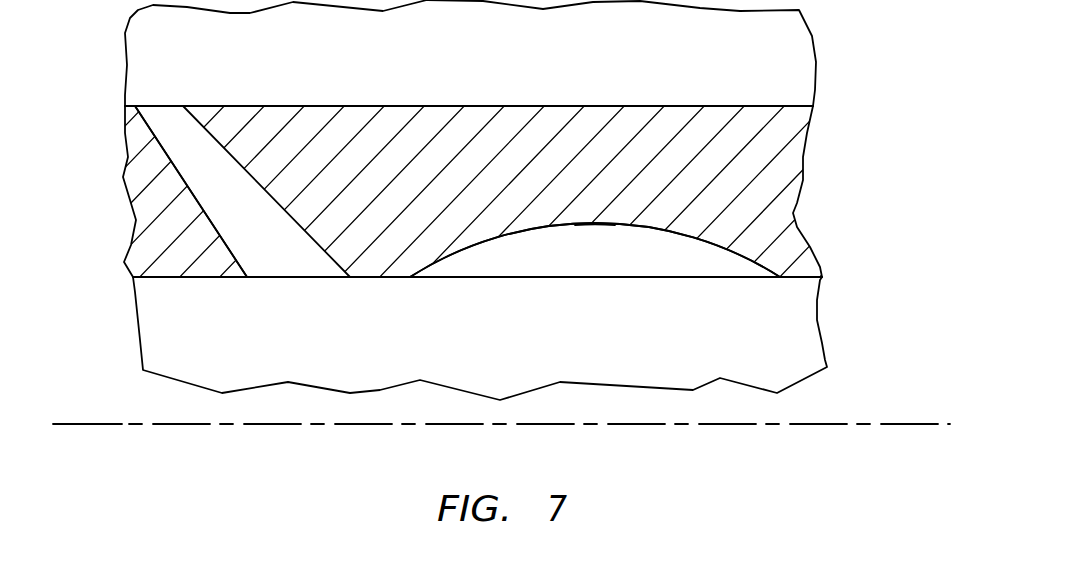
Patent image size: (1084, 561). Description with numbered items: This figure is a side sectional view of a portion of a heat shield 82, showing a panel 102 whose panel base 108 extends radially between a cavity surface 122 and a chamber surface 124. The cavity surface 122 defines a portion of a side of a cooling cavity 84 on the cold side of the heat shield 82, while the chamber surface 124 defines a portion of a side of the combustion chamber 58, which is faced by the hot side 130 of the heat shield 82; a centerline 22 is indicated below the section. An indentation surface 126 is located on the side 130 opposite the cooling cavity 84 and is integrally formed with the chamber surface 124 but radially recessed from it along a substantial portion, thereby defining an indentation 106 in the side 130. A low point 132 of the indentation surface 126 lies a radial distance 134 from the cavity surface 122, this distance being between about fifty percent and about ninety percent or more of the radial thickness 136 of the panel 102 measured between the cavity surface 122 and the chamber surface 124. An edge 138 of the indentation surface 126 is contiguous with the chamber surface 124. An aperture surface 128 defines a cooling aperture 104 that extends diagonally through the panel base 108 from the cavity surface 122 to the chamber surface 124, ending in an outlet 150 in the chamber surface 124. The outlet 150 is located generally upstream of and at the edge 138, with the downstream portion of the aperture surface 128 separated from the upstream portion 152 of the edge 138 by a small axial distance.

The centerline axis 22 is at (808, 425).
The combustion chamber 58 is at (518, 381).
The heat shield 82 is at (822, 127).
The cooling cavity 84 is at (425, 65).
The panel 102 is at (495, 191).
The cooling aperture 104 is at (268, 255).
The indentation 106 is at (610, 260).
The panel base 108 is at (789, 207).
The cavity surface 122 is at (778, 106).
The chamber surface 124 is at (797, 278).
The indentation surface 126 is at (454, 253).
The aperture surface 128 is at (230, 247).
The side 130 is at (155, 285).
The low point 132 is at (597, 226).
The radial distance 134 is at (597, 214).
The radial thickness 136 is at (117, 107).
The edge 138 is at (410, 277).
The outlet 150 is at (331, 289).
The upstream portion 152 is at (404, 290).